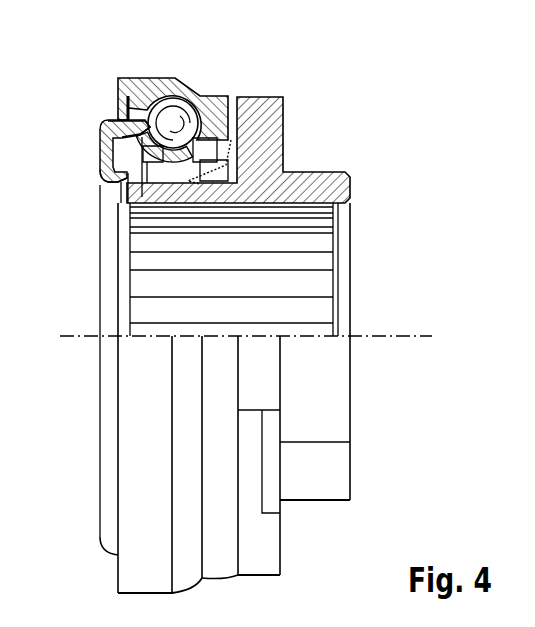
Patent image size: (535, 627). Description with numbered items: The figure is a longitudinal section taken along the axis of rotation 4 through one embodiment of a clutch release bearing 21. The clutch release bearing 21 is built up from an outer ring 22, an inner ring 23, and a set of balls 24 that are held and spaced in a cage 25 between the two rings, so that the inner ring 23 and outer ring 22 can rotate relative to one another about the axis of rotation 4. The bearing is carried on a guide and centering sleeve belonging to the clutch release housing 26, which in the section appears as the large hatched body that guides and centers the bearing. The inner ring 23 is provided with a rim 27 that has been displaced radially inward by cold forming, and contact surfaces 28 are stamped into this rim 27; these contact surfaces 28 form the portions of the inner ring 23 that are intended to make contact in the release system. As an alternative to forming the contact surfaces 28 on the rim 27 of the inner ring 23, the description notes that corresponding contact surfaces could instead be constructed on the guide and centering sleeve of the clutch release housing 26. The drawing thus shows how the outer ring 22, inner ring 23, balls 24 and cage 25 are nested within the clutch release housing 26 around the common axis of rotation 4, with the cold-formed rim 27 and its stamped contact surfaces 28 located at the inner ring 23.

The axis of rotation 4 is at (403, 334).
The clutch release bearing 21 is at (298, 77).
The outer ring 22 is at (161, 78).
The inner ring 23 is at (105, 123).
The balls 24 is at (192, 82).
The cage 25 is at (218, 99).
The clutch release housing 26 is at (313, 182).
The rim 27 is at (113, 179).
The contact surfaces 28 is at (100, 146).